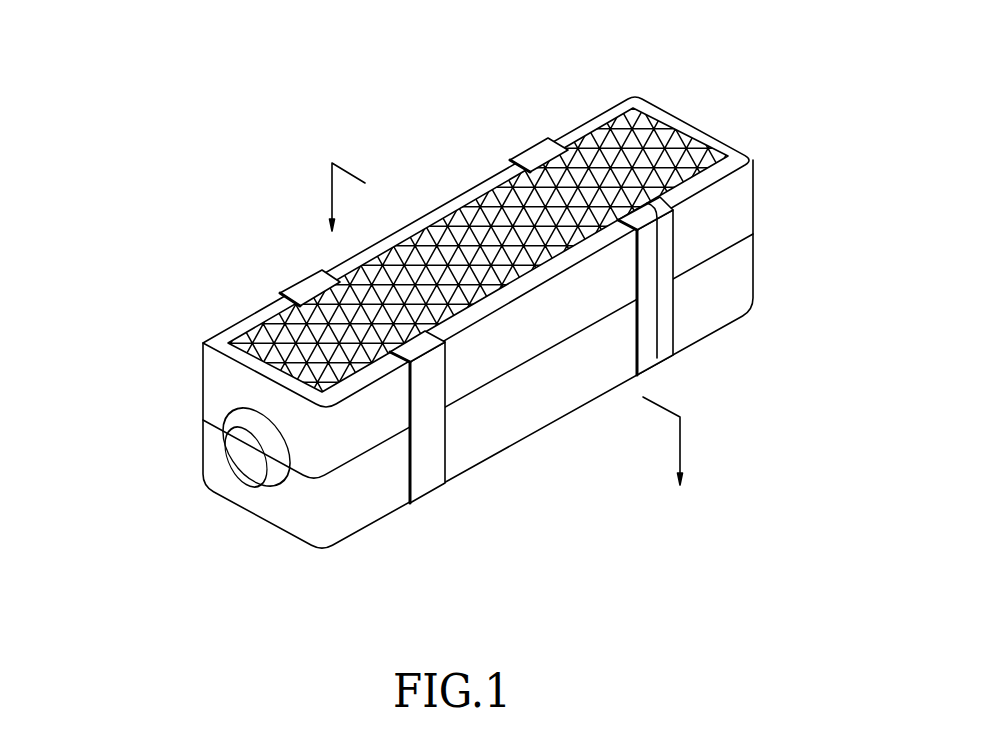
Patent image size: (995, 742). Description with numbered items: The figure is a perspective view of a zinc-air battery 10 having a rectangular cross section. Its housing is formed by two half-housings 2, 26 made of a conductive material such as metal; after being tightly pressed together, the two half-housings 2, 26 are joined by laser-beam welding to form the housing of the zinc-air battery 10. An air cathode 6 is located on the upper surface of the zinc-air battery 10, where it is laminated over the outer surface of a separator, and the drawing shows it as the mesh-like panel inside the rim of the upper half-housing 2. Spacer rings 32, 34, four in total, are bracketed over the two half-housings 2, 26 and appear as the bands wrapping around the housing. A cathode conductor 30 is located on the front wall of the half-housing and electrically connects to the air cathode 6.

The zinc-air battery 10 is at (410, 92).
The half-housing 2 is at (218, 370).
The air cathode 6 is at (688, 152).
The half-housing 26 is at (290, 507).
The cathode conductor 30 is at (237, 458).
The spacer ring 32 is at (545, 153).
The spacer ring 34 is at (313, 293).